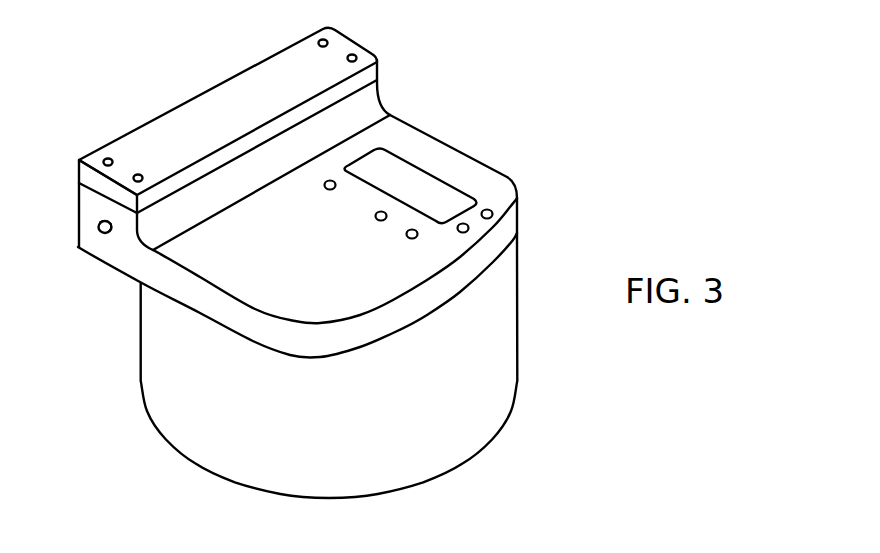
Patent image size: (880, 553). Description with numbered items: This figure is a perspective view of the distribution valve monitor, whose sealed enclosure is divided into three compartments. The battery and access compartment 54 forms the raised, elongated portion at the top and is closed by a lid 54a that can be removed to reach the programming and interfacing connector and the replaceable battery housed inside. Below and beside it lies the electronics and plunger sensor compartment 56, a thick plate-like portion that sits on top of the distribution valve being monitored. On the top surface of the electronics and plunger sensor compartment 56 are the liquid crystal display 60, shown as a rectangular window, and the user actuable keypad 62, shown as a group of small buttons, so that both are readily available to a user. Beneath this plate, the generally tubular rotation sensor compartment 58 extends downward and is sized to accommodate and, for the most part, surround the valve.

The battery and access compartment 54 is at (255, 127).
The lid 54a is at (332, 60).
The electronics and plunger sensor compartment 56 is at (503, 236).
The rotation sensor compartment 58 is at (478, 365).
The liquid crystal display 60 is at (410, 177).
The user actuable keypad 62 is at (392, 233).